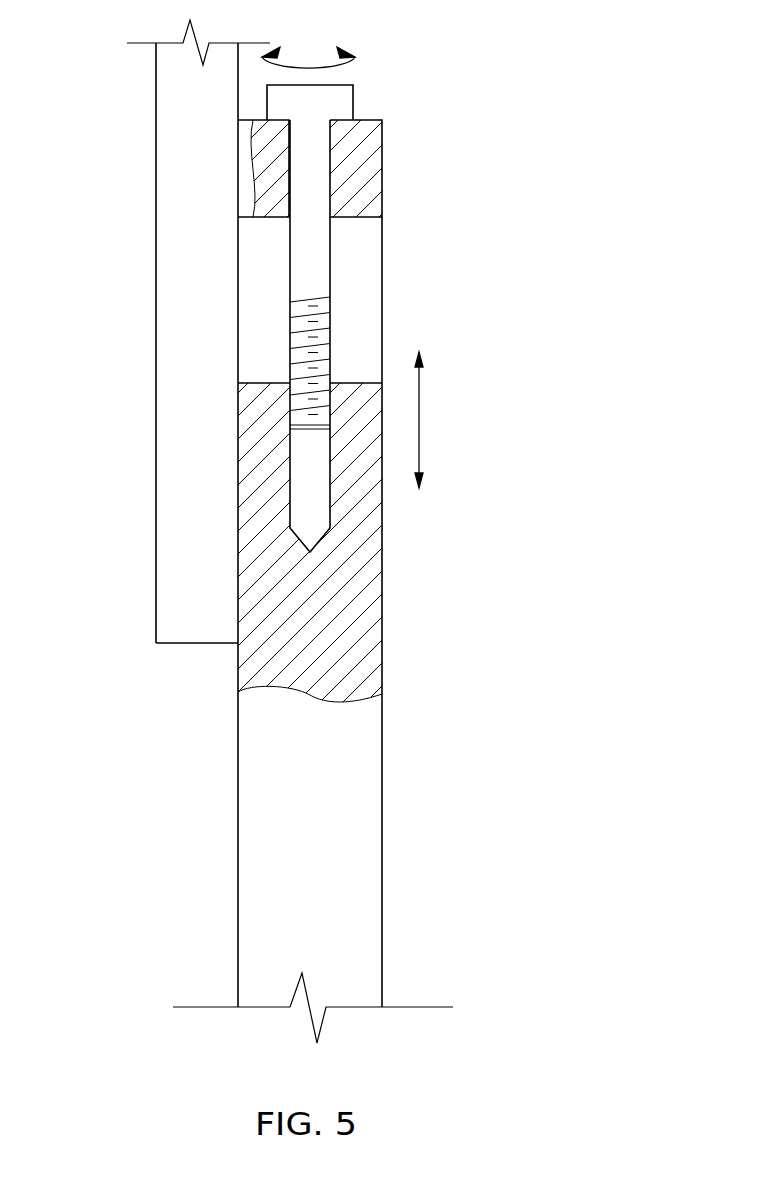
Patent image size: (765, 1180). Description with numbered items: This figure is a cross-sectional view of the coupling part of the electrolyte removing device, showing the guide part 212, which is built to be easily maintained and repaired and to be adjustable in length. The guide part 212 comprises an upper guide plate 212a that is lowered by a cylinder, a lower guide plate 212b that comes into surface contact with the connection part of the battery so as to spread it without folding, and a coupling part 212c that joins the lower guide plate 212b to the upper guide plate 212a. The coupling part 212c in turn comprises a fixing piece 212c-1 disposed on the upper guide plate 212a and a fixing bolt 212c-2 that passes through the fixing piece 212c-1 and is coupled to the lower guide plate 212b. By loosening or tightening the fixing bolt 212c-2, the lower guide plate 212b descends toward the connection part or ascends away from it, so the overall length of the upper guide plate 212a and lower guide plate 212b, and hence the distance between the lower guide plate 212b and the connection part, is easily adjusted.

The guide part 212 is at (342, 531).
The upper guide plate 212a is at (173, 173).
The lower guide plate 212b is at (367, 598).
The coupling part 212c is at (380, 312).
The fixing piece 212c-1 is at (367, 165).
The fixing bolt 212c-2 is at (338, 107).